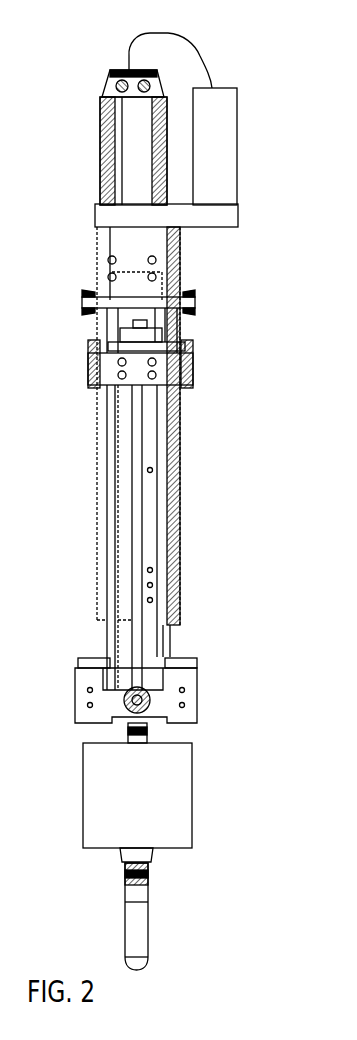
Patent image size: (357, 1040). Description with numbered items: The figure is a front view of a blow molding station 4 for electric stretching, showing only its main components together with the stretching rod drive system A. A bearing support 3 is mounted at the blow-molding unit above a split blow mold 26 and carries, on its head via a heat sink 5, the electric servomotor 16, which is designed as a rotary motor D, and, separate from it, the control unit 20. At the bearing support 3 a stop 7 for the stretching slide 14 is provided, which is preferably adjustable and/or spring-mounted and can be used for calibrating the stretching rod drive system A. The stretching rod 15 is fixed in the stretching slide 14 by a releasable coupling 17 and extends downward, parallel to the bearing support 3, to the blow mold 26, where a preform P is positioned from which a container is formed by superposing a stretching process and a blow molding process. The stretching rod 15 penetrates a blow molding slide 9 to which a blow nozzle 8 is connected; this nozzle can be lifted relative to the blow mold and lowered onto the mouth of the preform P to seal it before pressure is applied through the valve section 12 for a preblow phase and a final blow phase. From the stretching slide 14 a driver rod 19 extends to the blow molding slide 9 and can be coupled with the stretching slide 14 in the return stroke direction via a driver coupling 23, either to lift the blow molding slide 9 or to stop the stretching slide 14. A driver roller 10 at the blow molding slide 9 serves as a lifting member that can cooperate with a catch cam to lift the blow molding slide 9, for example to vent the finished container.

The bearing support 3 is at (180, 248).
The blow molding station 4 is at (292, 88).
The heat sink 5 is at (238, 211).
The stop 7 is at (195, 302).
The blow nozzle 8 is at (152, 856).
The blow molding slide 9 is at (197, 683).
The driver roller 10 is at (150, 698).
The valve section 12 is at (192, 760).
The stretching slide 14 is at (193, 369).
The stretching rod 15 is at (138, 447).
The electric servomotor 16 is at (120, 112).
The releasable coupling 17 is at (162, 334).
The driver rod 19 is at (165, 480).
The control unit 20 is at (237, 106).
The driver coupling 23 is at (185, 347).
The blow mold 26 is at (158, 913).
The stretching rod drive system A is at (237, 285).
The rotary motor D is at (137, 171).
The preform P is at (148, 943).